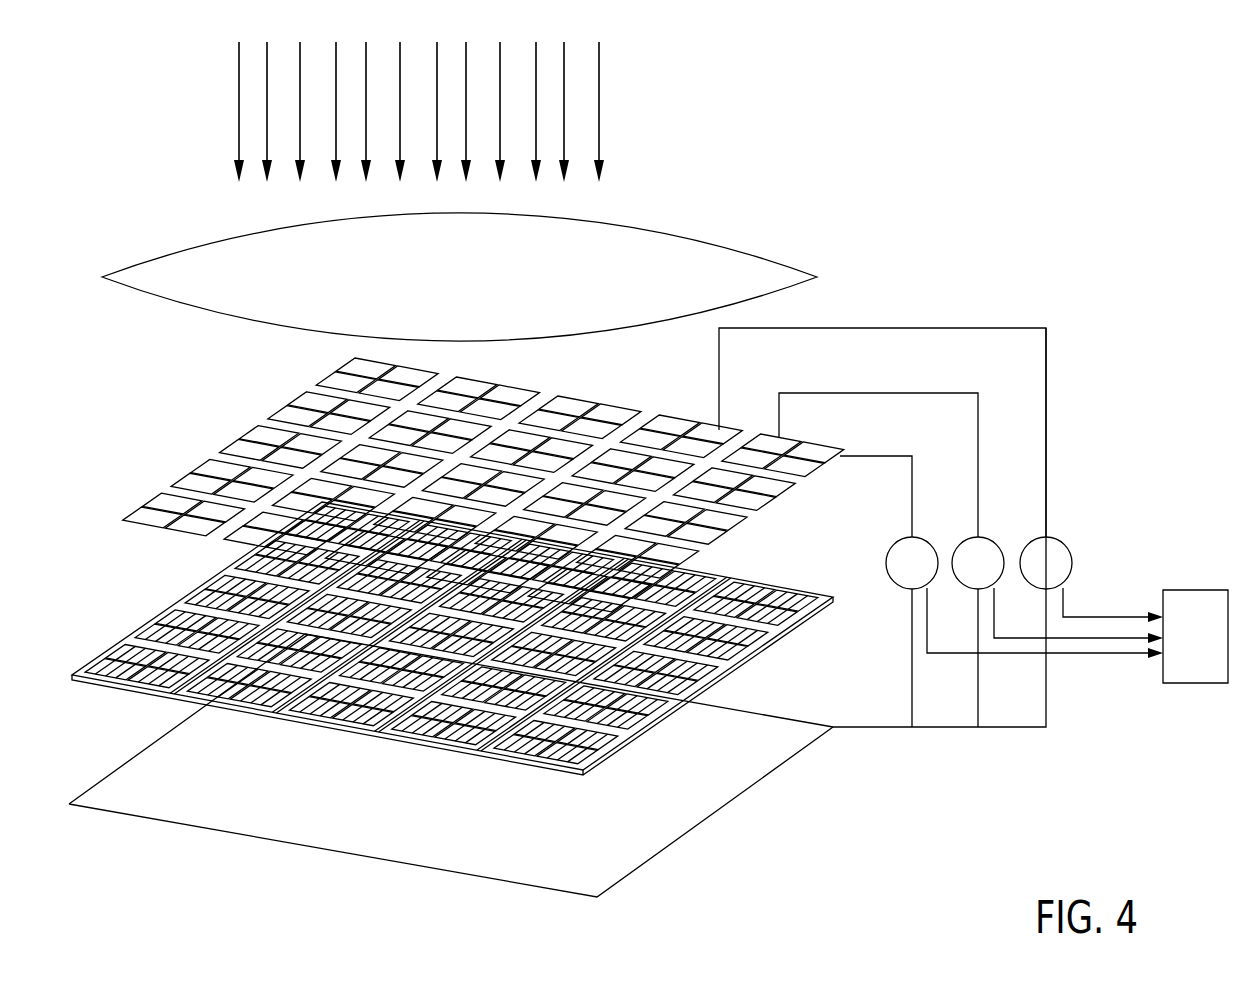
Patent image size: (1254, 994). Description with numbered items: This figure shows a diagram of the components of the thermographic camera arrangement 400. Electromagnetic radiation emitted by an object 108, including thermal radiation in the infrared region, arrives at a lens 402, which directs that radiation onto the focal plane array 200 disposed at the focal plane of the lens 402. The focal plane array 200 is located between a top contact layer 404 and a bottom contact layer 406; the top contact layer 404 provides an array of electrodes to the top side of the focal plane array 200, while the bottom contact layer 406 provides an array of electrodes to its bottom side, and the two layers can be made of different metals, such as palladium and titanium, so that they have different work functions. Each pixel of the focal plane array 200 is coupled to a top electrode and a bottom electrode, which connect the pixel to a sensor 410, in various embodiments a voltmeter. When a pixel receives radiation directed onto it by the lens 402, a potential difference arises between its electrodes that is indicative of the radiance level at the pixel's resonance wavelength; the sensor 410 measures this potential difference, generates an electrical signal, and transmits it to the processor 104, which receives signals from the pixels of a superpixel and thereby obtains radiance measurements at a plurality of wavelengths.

The object 108 is at (652, 93).
The imaging system 400 is at (1032, 80).
The lens 402 is at (718, 243).
The top contact layer 404 is at (175, 482).
The focal plane array 200 is at (148, 622).
The bottom contact layer 406 is at (97, 785).
The sensor 410 is at (1070, 554).
The processor 104 is at (1192, 590).